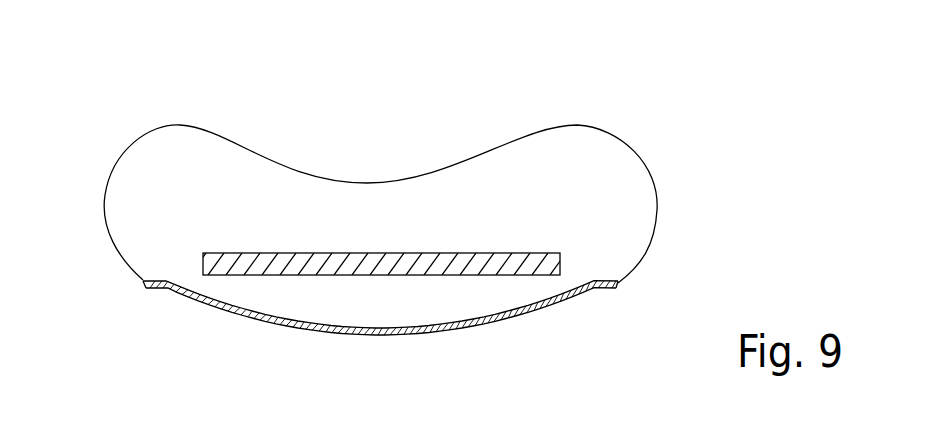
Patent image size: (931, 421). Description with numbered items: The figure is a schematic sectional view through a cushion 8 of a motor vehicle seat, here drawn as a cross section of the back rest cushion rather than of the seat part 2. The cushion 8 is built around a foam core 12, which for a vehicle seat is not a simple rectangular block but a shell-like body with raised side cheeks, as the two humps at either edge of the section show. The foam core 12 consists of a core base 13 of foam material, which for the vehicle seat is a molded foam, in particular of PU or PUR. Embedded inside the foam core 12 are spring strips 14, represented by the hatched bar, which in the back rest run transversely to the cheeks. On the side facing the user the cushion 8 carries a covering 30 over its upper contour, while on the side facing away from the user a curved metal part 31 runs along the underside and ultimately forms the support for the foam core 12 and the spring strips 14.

The seat part 2 is at (317, 123).
The cushion 8 is at (388, 144).
The foam core 12 is at (479, 122).
The core base 13 is at (623, 193).
The spring strips 14 is at (422, 277).
The covering 30 is at (202, 125).
The metal part 31 is at (515, 313).